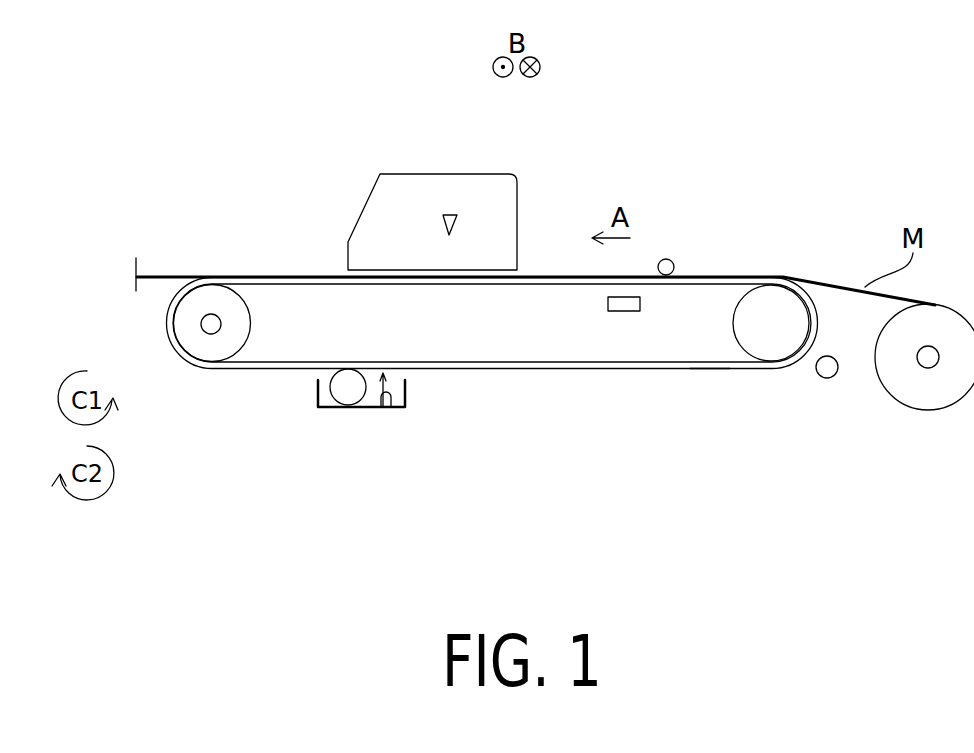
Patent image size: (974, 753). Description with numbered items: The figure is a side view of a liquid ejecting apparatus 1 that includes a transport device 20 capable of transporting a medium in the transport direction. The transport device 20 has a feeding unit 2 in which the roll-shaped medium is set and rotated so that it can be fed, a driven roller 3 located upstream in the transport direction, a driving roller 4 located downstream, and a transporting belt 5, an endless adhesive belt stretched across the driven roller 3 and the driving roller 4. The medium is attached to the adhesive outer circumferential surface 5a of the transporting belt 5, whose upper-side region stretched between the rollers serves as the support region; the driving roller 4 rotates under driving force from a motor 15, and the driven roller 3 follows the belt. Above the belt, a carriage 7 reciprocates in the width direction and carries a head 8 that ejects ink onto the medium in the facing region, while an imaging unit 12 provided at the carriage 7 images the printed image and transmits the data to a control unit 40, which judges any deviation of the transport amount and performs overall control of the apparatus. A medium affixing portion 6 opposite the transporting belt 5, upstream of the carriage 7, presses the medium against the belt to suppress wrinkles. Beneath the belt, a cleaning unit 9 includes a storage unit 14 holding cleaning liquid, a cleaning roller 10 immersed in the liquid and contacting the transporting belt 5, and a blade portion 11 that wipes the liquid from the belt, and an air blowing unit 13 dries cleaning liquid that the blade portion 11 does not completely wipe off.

The liquid ejecting apparatus 1 is at (841, 86).
The feeding unit 2 is at (928, 368).
The driven roller 3 is at (770, 330).
The driving roller 4 is at (210, 338).
The transporting belt 5 is at (530, 369).
The outer circumferential surface 5a is at (708, 370).
The medium affixing portion 6 is at (668, 259).
The carriage 7 is at (440, 174).
The head 8 is at (428, 270).
The cleaning unit 9 is at (285, 442).
The cleaning roller 10 is at (348, 393).
The blade portion 11 is at (393, 407).
The imaging unit 12 is at (458, 223).
The air blowing unit 13 is at (827, 378).
The storage unit 14 is at (405, 393).
The motor 15 is at (201, 323).
The transport device 20 is at (808, 514).
The control unit 40 is at (623, 311).